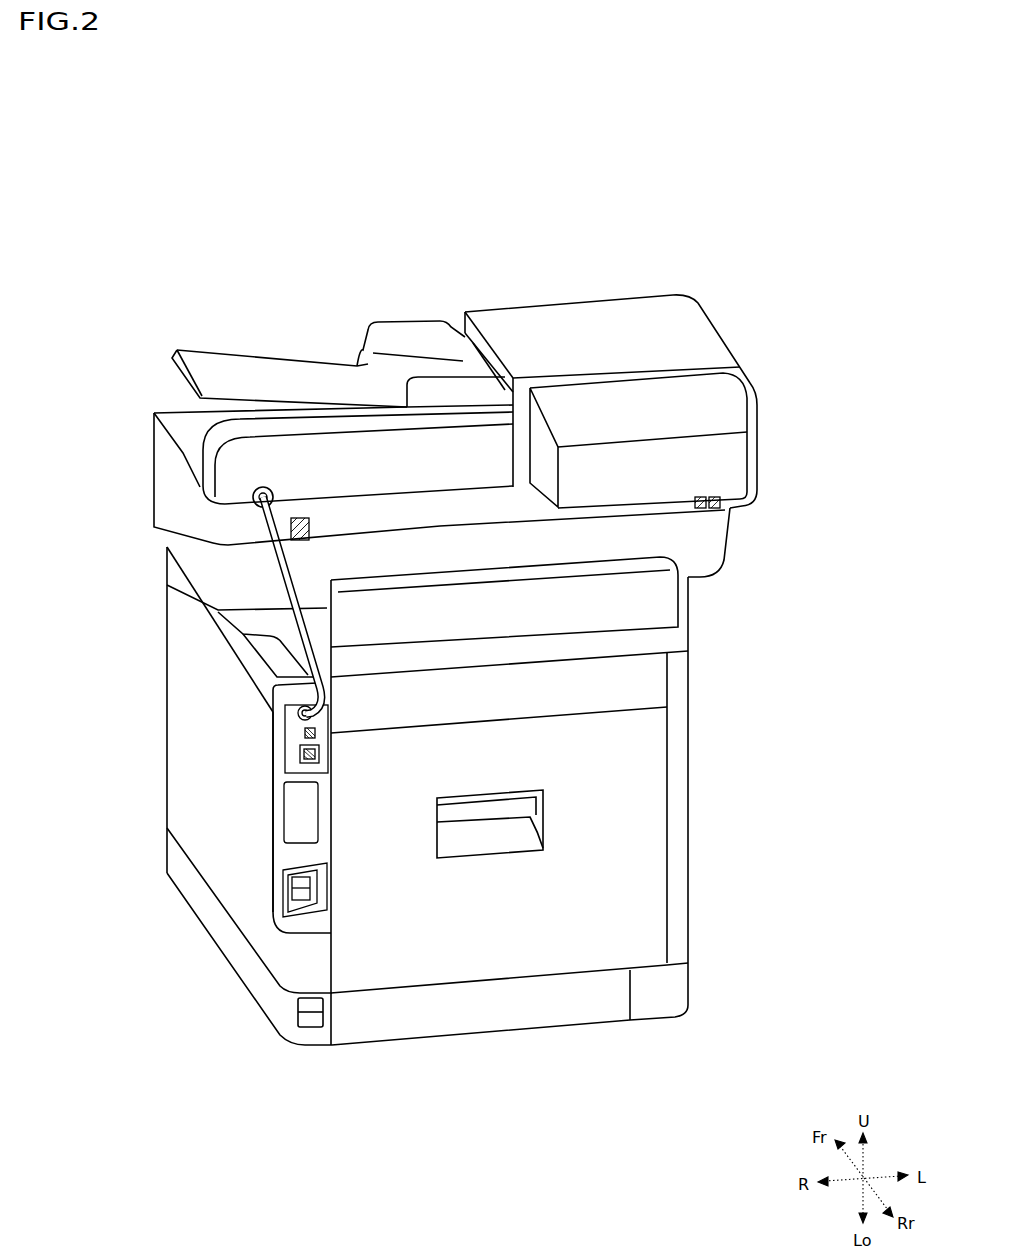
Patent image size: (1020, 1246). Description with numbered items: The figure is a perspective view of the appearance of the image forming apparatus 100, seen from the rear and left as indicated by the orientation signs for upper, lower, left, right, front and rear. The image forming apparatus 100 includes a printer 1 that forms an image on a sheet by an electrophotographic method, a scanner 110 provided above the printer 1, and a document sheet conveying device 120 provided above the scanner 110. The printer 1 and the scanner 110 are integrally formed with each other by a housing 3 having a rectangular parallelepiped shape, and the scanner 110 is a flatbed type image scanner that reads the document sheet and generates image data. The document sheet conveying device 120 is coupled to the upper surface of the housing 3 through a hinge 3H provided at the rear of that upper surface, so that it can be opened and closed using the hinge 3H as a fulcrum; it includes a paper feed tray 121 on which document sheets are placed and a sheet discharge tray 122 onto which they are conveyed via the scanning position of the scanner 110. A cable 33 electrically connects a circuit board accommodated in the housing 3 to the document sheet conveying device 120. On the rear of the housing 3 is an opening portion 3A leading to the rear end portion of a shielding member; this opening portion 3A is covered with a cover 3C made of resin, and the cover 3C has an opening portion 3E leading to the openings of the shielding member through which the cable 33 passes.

The printer 1 is at (467, 796).
The housing 3 is at (690, 757).
The opening portion 3A is at (283, 823).
The cover 3C is at (273, 797).
The opening portion 3E is at (300, 720).
The hinge 3H is at (318, 530).
The cable 33 is at (283, 569).
The image forming apparatus 100 is at (547, 289).
The scanner 110 is at (476, 462).
The document sheet conveying device 120 is at (516, 364).
The paper feed tray 121 is at (230, 350).
The sheet discharge tray 122 is at (185, 415).